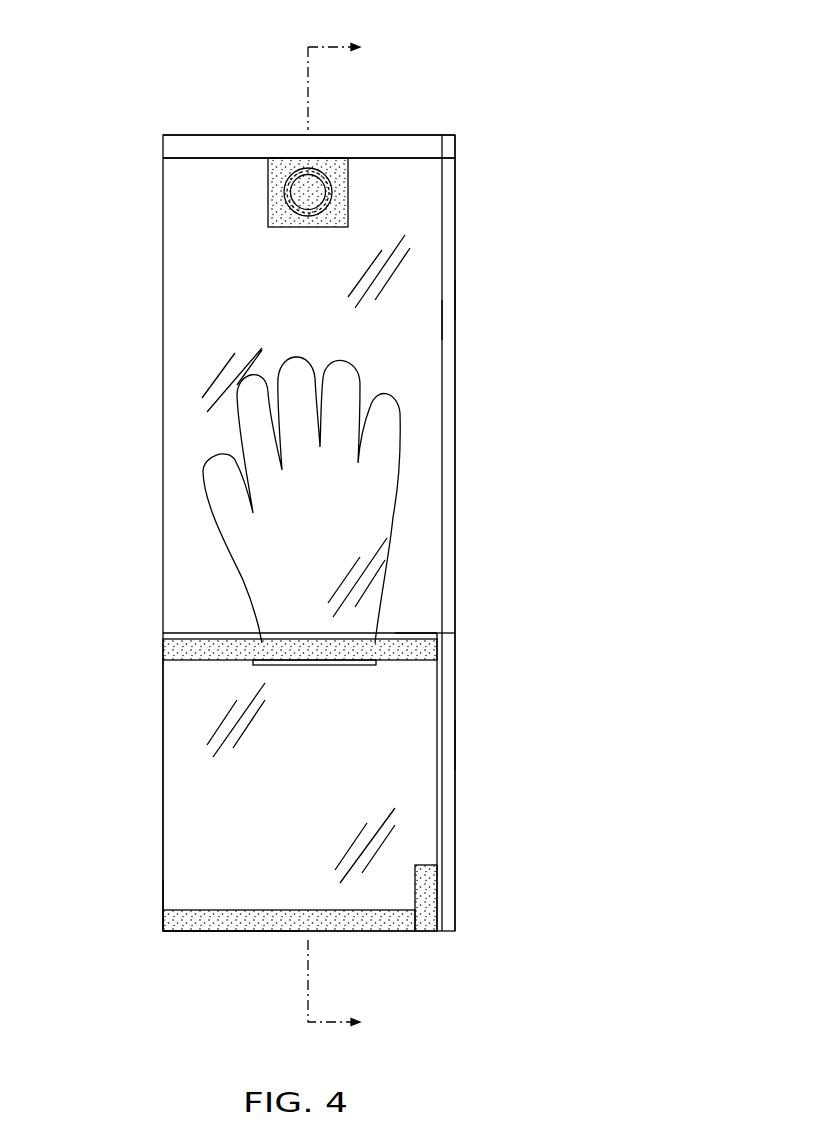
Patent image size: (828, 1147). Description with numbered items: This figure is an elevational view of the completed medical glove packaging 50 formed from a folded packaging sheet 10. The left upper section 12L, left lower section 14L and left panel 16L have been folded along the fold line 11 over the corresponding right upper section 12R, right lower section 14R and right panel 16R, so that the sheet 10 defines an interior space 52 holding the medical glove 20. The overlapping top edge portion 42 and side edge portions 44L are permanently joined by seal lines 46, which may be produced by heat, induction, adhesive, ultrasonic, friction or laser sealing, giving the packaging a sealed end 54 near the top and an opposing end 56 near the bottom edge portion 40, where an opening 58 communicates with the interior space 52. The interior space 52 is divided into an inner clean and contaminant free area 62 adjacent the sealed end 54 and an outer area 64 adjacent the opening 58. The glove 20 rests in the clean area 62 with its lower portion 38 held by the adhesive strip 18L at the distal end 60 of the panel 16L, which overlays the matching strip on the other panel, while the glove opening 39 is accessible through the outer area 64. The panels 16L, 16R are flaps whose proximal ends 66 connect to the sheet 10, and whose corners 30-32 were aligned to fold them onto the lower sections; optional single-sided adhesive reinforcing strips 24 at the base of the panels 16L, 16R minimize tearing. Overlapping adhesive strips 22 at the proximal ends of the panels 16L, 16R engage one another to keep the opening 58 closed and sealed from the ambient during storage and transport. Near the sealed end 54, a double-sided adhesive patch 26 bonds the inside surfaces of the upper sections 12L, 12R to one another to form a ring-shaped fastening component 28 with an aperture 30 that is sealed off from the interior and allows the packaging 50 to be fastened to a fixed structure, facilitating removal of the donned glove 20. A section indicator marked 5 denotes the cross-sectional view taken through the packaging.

The packaging sheet 10 is at (155, 370).
The medical glove packaging 50 is at (136, 111).
The fold line 11 is at (165, 135).
The top end or edge portion 42 is at (368, 135).
The sealed end 54 is at (262, 112).
The section line 5 is at (348, 535).
The seal lines 46 is at (421, 157).
The side edge portion 44L is at (455, 262).
The upper section 12R is at (455, 300).
The upper section 12L is at (455, 323).
The lower section 14R is at (455, 745).
The lower section 14L is at (437, 775).
The fastening component 28 is at (335, 193).
The aperture 30 is at (305, 200).
The double-sided adhesive patch 26 is at (268, 170).
The interior space 52 is at (203, 323).
The inner clean and contaminant free area 62 is at (200, 412).
The outer area 64 is at (190, 690).
The panel 16L is at (230, 775).
The panel 16R is at (400, 817).
The adhesive strip 18L is at (400, 635).
The medical glove 20 is at (395, 508).
The lower portion 38 is at (290, 625).
The distal end 60 is at (177, 633).
The opening 39 is at (315, 665).
The corners 30-32 is at (450, 633).
The adhesive strips 22 is at (205, 918).
The single-sided adhesive reinforcing strips 24 is at (427, 933).
The proximal ends 66 is at (188, 886).
The bottom end or edge portion 40 is at (177, 931).
The opening 58 is at (275, 938).
The opposing end 56 is at (394, 963).